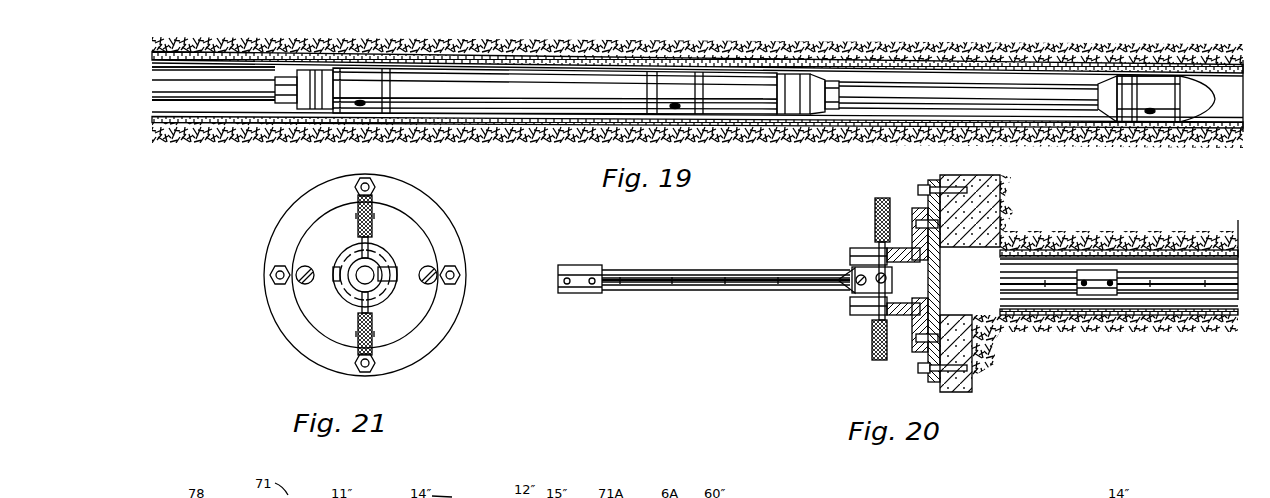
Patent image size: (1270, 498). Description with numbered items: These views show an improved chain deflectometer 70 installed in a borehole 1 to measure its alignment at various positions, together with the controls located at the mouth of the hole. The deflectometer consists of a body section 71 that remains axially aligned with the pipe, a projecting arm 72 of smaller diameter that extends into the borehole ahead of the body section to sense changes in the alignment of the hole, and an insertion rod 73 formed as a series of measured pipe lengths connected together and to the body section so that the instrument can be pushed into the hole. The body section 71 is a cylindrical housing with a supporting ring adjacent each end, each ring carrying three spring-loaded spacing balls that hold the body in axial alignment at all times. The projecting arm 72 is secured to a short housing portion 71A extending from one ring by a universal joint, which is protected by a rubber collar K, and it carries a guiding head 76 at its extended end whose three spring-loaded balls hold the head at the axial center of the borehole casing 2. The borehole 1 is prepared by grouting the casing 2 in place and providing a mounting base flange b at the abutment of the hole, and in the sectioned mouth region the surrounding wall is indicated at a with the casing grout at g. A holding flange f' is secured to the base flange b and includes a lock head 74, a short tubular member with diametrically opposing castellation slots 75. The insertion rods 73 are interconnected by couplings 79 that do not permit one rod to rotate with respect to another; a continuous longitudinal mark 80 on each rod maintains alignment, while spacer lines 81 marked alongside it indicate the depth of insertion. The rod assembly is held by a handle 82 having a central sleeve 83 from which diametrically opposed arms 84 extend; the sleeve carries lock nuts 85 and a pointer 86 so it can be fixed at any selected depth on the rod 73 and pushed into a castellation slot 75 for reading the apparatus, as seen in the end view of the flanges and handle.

In FIG. 19, the chain deflectometer 70 is at (322, 30).
In FIG. 19, the insertion rod 73 is at (215, 78).
In FIG. 21, the insertion rod 73 is at (360, 272).
In FIG. 20, the insertion rod 73 is at (640, 276).
In FIG. 19, the body section 71 is at (513, 85).
In FIG. 19, the short housing portion 71A is at (747, 78).
In FIG. 19, the projecting arm 72 is at (948, 95).
In FIG. 19, the guiding head 76 is at (1185, 84).
In FIG. 19, the casing 2 is at (165, 113).
In FIG. 20, the casing 2 is at (1080, 258).
In FIG. 19, the casing g is at (157, 127).
In FIG. 20, the casing g is at (1110, 318).
In FIG. 19, the borehole 1 is at (220, 123).
In FIG. 20, the borehole 1 is at (1158, 246).
In FIG. 19, the rubber collar K is at (297, 93).
In FIG. 21, the mounting base flange b is at (296, 218).
In FIG. 20, the mounting base flange b is at (930, 180).
In FIG. 21, the holding flange f' is at (365, 261).
In FIG. 20, the holding flange f' is at (916, 264).
In FIG. 21, the lock head 74 is at (345, 253).
In FIG. 20, the lock head 74 is at (868, 256).
In FIG. 21, the castellation slot 75 is at (373, 250).
In FIG. 20, the castellation slot 75 is at (873, 259).
In FIG. 21, the central sleeve 83 is at (355, 292).
In FIG. 20, the central sleeve 83 is at (869, 292).
In FIG. 21, the arms 84 is at (376, 300).
In FIG. 20, the arms 84 is at (876, 326).
In FIG. 21, the handle 82 is at (357, 328).
In FIG. 20, the handle 82 is at (876, 203).
In FIG. 20, the pointer 86 is at (840, 273).
In FIG. 20, the continuous longitudinal mark 80 is at (712, 288).
In FIG. 20, the spacer lines 81 is at (712, 285).
In FIG. 20, the lock nuts 85 is at (872, 290).
In FIG. 20, the wall a is at (975, 206).
In FIG. 20, the couplings 79 is at (1092, 295).